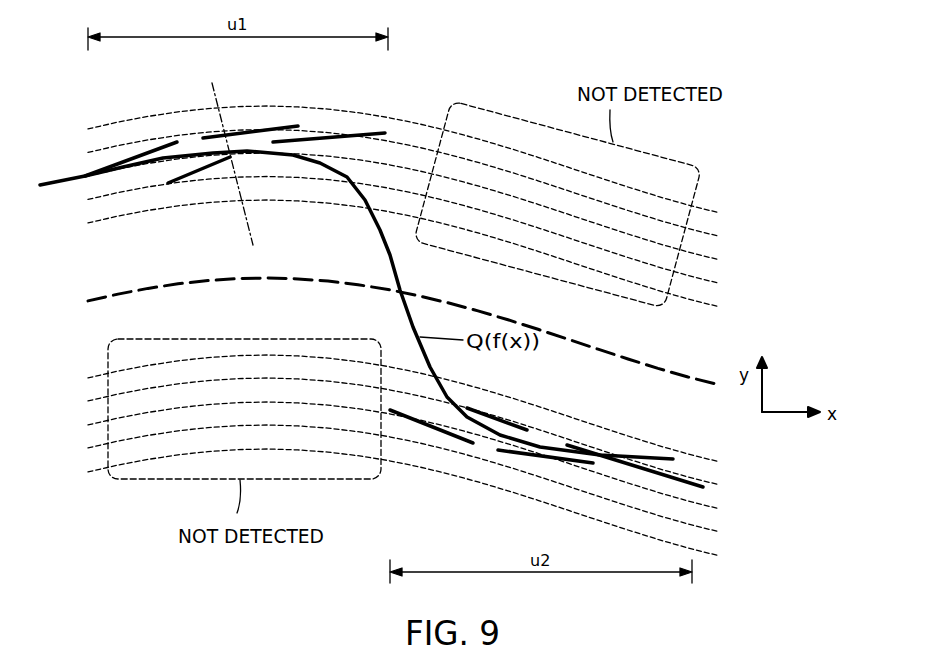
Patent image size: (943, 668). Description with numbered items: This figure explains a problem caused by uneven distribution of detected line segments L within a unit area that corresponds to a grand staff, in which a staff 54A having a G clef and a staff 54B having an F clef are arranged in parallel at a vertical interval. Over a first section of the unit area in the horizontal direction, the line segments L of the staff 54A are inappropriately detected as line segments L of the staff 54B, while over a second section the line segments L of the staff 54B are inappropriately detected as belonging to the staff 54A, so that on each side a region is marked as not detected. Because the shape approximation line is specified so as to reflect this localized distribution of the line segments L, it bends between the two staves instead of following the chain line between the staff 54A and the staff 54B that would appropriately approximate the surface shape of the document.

The staff 54A is at (728, 207).
The staff 54B is at (728, 457).
The line segment L is at (162, 150).